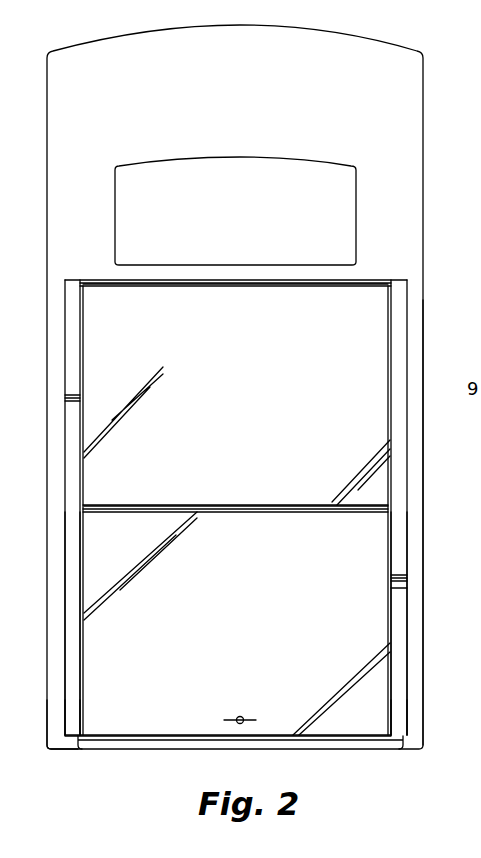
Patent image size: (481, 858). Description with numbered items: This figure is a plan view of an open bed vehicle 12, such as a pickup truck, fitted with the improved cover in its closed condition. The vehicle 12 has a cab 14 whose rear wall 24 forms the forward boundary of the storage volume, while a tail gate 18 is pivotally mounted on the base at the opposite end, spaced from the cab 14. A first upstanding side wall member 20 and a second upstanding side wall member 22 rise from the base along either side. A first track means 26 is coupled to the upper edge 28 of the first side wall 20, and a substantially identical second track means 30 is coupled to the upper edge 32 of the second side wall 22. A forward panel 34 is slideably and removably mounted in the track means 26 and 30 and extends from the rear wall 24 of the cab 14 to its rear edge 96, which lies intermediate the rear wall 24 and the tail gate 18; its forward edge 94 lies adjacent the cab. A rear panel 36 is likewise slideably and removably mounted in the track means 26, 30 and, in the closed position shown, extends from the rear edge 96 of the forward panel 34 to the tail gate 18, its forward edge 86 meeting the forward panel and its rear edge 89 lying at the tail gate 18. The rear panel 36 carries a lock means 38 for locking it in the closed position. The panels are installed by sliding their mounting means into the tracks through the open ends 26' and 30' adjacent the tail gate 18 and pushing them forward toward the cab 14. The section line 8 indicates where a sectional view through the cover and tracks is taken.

The section line 8- 8 is at (80, 270).
The open bed vehicle 12 is at (392, 21).
The cab 14 is at (412, 189).
The tail gate 18 is at (340, 750).
The first upstanding side wall member 20 is at (48, 737).
The second upstanding side wall member 22 is at (428, 694).
The rear wall 24 is at (322, 284).
The first track means 26 is at (96, 507).
The open end 26' is at (101, 740).
The upper edge 28 is at (58, 668).
The second track means 30 is at (378, 507).
The open end 30' is at (434, 739).
The upper edge 32 is at (418, 626).
The forward panel 34 is at (252, 407).
The rear panel 36 is at (252, 612).
The lock means 38 is at (243, 718).
The forward edge 86 is at (255, 515).
The rear edge 89 is at (141, 735).
The forward edge 94 is at (145, 289).
The rear edge 96 is at (225, 503).